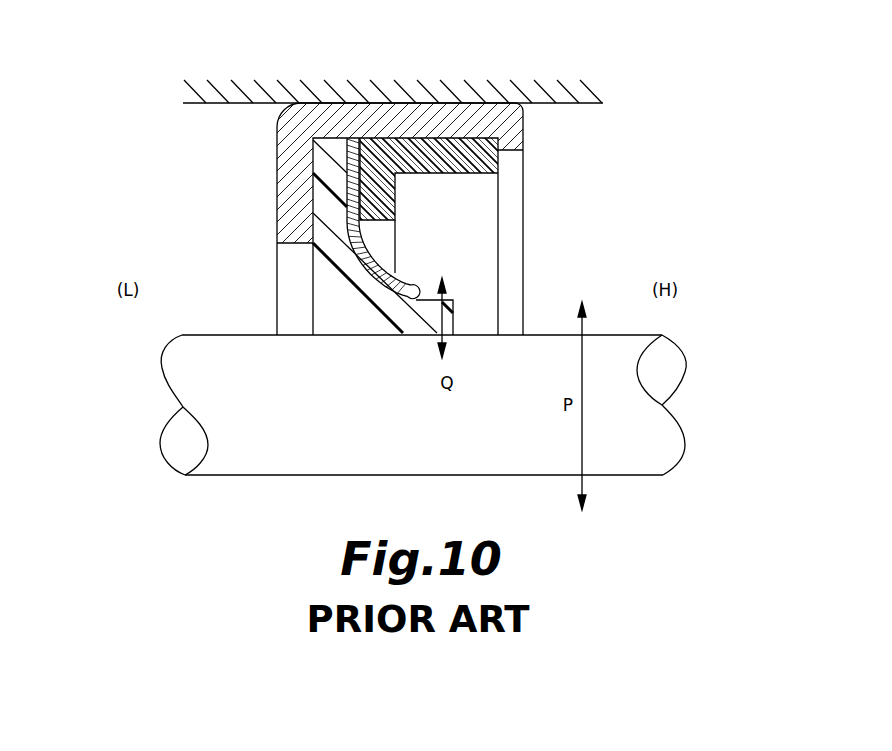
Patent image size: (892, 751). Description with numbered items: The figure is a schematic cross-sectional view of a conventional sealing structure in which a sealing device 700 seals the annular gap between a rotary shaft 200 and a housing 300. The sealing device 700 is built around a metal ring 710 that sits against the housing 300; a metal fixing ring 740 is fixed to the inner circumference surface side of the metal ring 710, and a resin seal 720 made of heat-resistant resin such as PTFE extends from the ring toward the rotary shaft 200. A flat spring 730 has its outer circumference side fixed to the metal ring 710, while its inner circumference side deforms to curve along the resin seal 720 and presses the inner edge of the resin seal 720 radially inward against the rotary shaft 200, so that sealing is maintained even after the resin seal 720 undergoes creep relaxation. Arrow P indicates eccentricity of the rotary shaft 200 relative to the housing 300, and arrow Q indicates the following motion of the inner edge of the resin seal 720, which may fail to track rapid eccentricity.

The sealing device 700 is at (247, 214).
The metal ring 710 is at (420, 116).
The resin seal 720 is at (350, 288).
The flat spring 730 is at (388, 268).
The metal fixing ring 740 is at (465, 173).
The rotary shaft 200 is at (423, 405).
The housing 300 is at (393, 82).